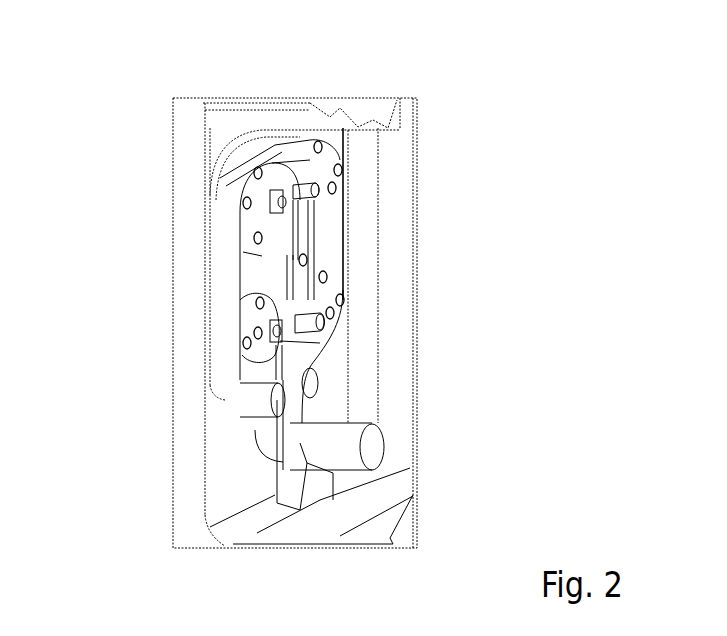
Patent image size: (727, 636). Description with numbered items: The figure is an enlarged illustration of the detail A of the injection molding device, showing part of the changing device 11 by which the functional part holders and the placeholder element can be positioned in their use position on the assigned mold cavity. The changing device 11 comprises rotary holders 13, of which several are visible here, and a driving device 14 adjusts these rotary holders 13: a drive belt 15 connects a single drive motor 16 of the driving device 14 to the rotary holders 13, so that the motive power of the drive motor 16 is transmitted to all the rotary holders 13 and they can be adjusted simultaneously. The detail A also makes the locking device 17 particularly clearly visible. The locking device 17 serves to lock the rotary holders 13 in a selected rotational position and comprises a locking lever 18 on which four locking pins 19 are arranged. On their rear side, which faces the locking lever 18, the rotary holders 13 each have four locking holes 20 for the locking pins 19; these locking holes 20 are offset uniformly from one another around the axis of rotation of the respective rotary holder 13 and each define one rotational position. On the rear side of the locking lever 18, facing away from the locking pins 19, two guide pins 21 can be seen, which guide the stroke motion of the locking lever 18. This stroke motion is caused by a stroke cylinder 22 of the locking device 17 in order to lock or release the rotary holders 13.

The changing device 11 is at (472, 258).
The rotary holders 13 is at (248, 200).
The driving device 14 is at (398, 427).
The drive belt 15 is at (228, 266).
The drive motor 16 is at (373, 450).
The locking device 17 is at (352, 282).
The locking lever 18 is at (294, 182).
The locking pins 19 is at (284, 202).
The locking holes 20 is at (259, 172).
The guide pins 21 is at (313, 195).
The stroke cylinder 22 is at (255, 262).
The detail A is at (339, 98).